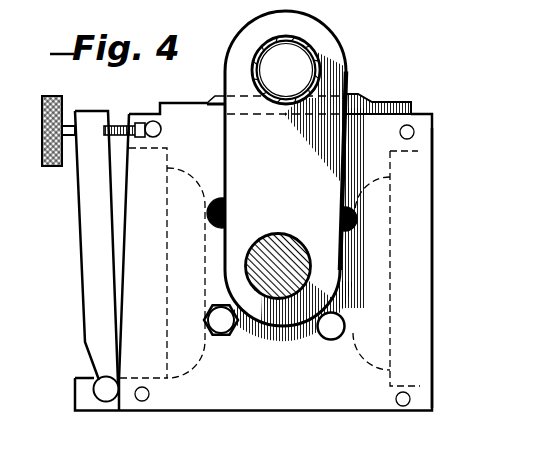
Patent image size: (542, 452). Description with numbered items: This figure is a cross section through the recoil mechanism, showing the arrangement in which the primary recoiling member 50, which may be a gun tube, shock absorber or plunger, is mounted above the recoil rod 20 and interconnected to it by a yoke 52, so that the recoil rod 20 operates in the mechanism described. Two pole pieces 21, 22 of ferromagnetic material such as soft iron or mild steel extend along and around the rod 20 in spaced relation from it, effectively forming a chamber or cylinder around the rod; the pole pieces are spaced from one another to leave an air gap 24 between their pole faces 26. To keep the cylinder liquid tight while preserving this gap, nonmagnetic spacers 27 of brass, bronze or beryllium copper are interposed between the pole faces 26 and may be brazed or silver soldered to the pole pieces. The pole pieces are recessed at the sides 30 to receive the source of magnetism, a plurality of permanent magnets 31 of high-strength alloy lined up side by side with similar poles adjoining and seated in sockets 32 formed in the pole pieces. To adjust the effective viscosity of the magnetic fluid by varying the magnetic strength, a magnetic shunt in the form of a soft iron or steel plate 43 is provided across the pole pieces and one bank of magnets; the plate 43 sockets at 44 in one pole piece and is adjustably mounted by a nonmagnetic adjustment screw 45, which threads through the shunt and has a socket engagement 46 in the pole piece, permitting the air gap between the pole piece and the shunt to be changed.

The rod 20 is at (267, 228).
The pole piece 21 is at (426, 121).
The pole piece 22 is at (404, 394).
The air gap 24 is at (347, 262).
The pole faces 26 is at (211, 243).
The spacers 27 is at (207, 272).
The side recess 30 is at (355, 190).
The permanent magnets 31 is at (406, 298).
The sockets 32 is at (410, 143).
The plate 43 is at (74, 268).
The socket 44 is at (97, 383).
The adjustment screw 45 is at (108, 116).
The socket engagement 46 is at (145, 112).
The primary recoiling member 50 is at (303, 38).
The yoke 52 is at (285, 168).